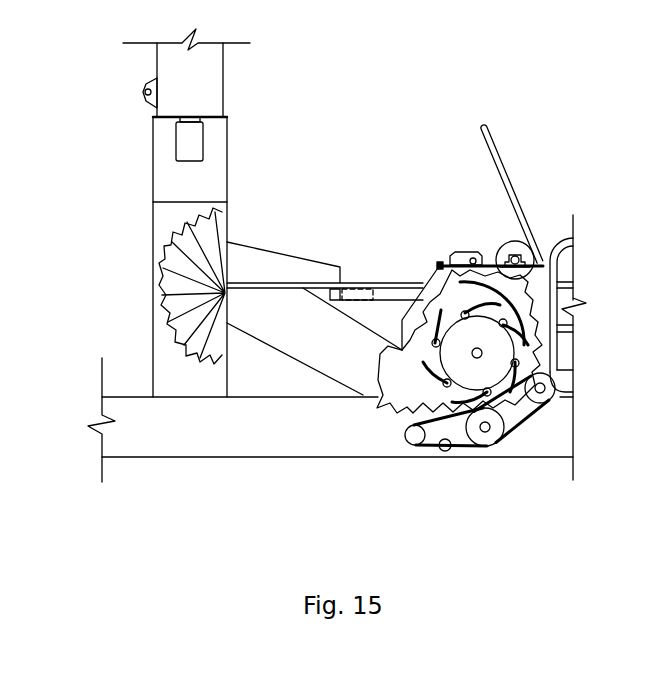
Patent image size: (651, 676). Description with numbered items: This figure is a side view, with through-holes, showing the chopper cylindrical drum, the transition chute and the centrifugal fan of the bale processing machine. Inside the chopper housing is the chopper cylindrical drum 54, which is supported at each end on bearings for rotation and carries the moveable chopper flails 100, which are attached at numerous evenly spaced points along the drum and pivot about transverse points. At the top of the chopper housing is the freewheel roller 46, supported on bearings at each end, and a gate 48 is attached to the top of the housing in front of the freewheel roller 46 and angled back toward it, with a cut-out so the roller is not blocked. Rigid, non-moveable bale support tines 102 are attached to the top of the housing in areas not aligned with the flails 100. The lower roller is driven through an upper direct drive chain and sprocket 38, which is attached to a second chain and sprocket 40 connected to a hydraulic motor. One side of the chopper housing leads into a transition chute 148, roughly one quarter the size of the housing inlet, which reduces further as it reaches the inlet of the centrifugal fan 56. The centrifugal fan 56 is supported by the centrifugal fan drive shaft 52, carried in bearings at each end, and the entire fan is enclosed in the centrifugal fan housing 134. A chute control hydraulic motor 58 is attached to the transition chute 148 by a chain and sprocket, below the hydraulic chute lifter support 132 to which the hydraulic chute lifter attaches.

The hydraulic chute lifter support 132 is at (145, 92).
The transition chute 148 is at (163, 177).
The chute control hydraulic motor 58 is at (203, 140).
The centrifugal fan housing 134 is at (162, 348).
The centrifugal fan 56 is at (200, 243).
The centrifugal fan drive shaft 52 is at (355, 283).
The chopper cylindrical drum 54 is at (397, 393).
The chopper flails 100 is at (426, 288).
The gate 48 is at (492, 140).
The freewheel roller 46 is at (515, 240).
The bale support tines 102 is at (542, 262).
The chain and sprocket 38 is at (547, 400).
The second chain and sprocket 40 is at (490, 447).